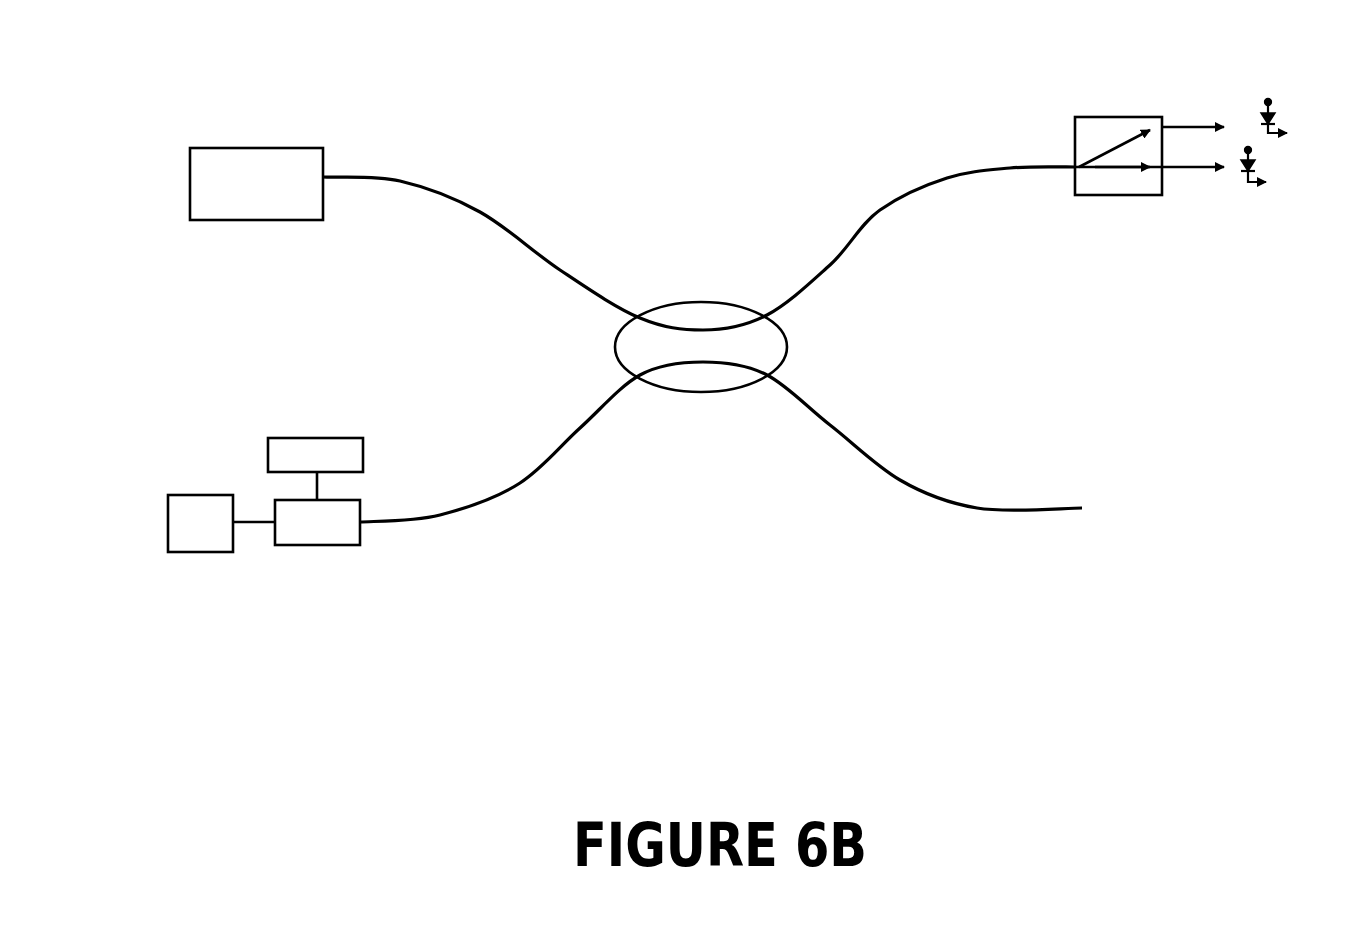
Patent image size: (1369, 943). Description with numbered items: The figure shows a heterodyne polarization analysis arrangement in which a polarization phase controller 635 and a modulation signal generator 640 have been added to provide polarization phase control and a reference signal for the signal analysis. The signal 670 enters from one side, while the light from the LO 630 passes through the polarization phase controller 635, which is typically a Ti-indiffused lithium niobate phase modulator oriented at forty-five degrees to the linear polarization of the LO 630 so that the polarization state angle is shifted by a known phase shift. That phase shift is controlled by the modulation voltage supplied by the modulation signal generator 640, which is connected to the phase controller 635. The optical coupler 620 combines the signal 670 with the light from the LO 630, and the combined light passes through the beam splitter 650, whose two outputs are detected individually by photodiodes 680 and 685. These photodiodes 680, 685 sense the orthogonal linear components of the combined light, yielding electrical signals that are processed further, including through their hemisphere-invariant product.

The optical coupler 620 is at (708, 312).
The LO 630 is at (187, 499).
The polarization phase controller 635 is at (327, 539).
The modulation signal generator 640 is at (338, 447).
The beam splitter 650 is at (1112, 122).
The signal 670 is at (292, 147).
The photodiode 680 is at (1271, 102).
The photodiode 685 is at (1272, 181).